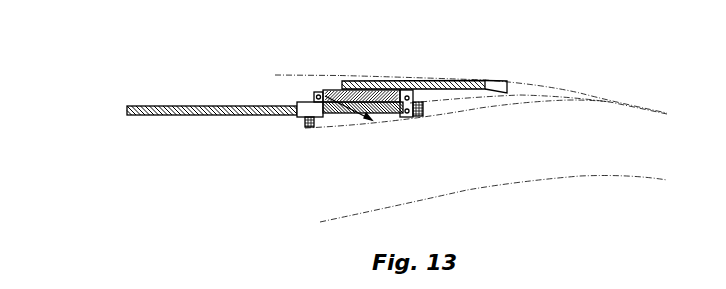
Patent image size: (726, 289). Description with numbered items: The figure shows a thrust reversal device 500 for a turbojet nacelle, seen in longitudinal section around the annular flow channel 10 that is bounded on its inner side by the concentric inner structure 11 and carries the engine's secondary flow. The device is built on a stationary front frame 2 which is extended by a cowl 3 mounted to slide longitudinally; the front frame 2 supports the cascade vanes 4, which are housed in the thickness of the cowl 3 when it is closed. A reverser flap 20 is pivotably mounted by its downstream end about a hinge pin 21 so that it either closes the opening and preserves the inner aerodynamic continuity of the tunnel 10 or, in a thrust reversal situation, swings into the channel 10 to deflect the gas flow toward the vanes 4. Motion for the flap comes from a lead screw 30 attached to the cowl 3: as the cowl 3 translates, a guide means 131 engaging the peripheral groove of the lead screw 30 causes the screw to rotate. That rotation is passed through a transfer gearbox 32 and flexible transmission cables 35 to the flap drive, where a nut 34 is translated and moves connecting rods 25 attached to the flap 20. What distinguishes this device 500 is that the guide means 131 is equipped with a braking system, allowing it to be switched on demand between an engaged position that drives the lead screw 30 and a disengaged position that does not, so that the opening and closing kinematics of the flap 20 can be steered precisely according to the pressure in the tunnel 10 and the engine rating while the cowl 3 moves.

The thrust reversal device 500 is at (152, 80).
The lead screw 30 is at (152, 116).
The guide means 131 is at (297, 118).
The front frame 2 is at (295, 87).
The nut 34 is at (324, 96).
The flexible transmission cables 35 is at (368, 100).
The connecting rods 25 is at (347, 113).
The cascade vanes 4 is at (423, 82).
The cowl 3 is at (507, 93).
The transfer gearbox 32 is at (411, 111).
The hinge pin 21 is at (416, 116).
The reverser flap 20 is at (387, 124).
The annular flow channel 10 is at (593, 125).
The inner structure 11 is at (562, 178).